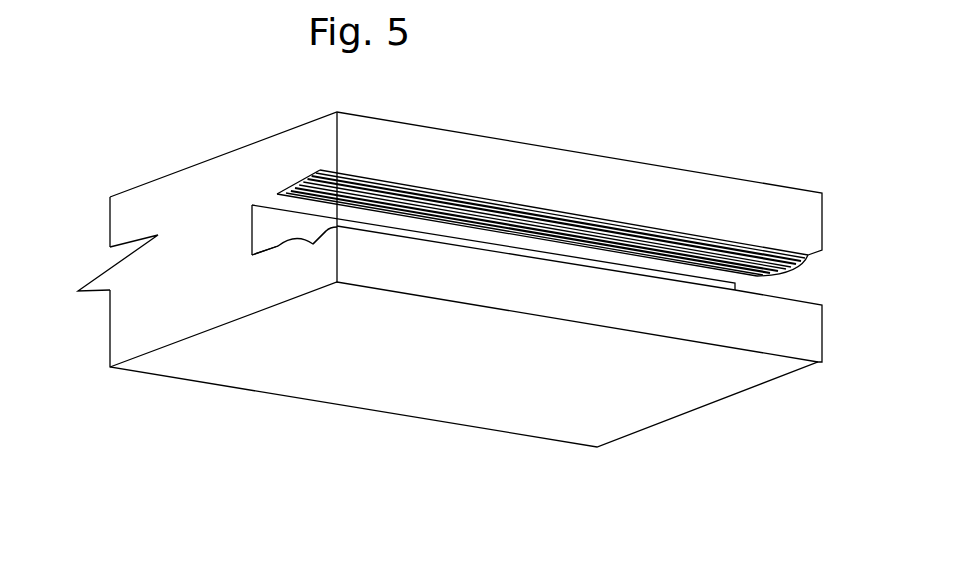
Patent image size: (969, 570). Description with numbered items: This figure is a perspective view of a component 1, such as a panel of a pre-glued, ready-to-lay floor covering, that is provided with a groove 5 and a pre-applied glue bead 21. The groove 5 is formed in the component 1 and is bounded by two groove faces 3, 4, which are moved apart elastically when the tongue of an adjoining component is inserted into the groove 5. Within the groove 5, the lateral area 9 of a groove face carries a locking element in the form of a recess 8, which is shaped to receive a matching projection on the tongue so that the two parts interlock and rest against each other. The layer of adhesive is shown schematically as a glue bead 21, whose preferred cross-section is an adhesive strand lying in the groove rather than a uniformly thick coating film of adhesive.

The component 1 is at (145, 215).
The groove face 3 is at (305, 138).
The groove face 4 is at (287, 283).
The groove 5 is at (493, 247).
The recess 8 is at (320, 170).
The lateral area of the groove 9 is at (282, 205).
The glue bead 21 is at (300, 182).